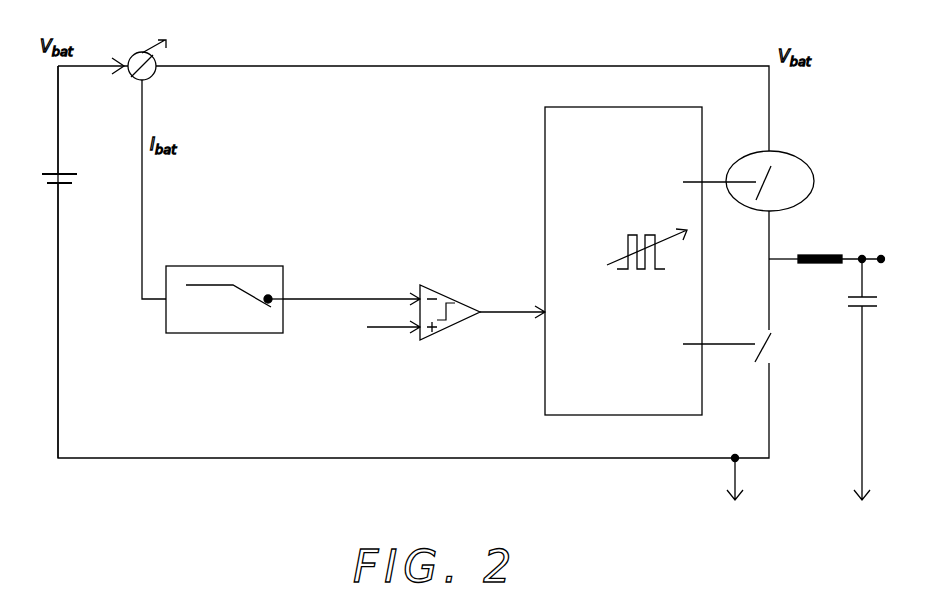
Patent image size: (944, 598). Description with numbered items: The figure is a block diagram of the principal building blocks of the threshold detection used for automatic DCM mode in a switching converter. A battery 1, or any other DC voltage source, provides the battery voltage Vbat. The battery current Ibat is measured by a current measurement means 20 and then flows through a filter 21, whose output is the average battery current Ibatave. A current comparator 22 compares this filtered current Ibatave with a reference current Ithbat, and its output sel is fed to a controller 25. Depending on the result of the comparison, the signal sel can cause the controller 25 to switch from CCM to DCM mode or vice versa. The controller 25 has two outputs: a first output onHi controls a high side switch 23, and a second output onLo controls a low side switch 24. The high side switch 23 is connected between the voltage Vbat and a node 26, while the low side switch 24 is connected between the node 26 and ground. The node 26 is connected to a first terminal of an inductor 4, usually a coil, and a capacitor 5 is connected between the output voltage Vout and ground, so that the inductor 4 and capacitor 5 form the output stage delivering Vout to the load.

The battery 1 is at (82, 179).
The current measurement means 20 is at (131, 50).
The filter 21 is at (252, 264).
The current comparator 22 is at (432, 289).
The high side switch 23 is at (790, 152).
The low side switch 24 is at (752, 360).
The controller 25 is at (545, 156).
The node 26 is at (769, 262).
The inductor 4 is at (806, 268).
The capacitor 5 is at (852, 310).